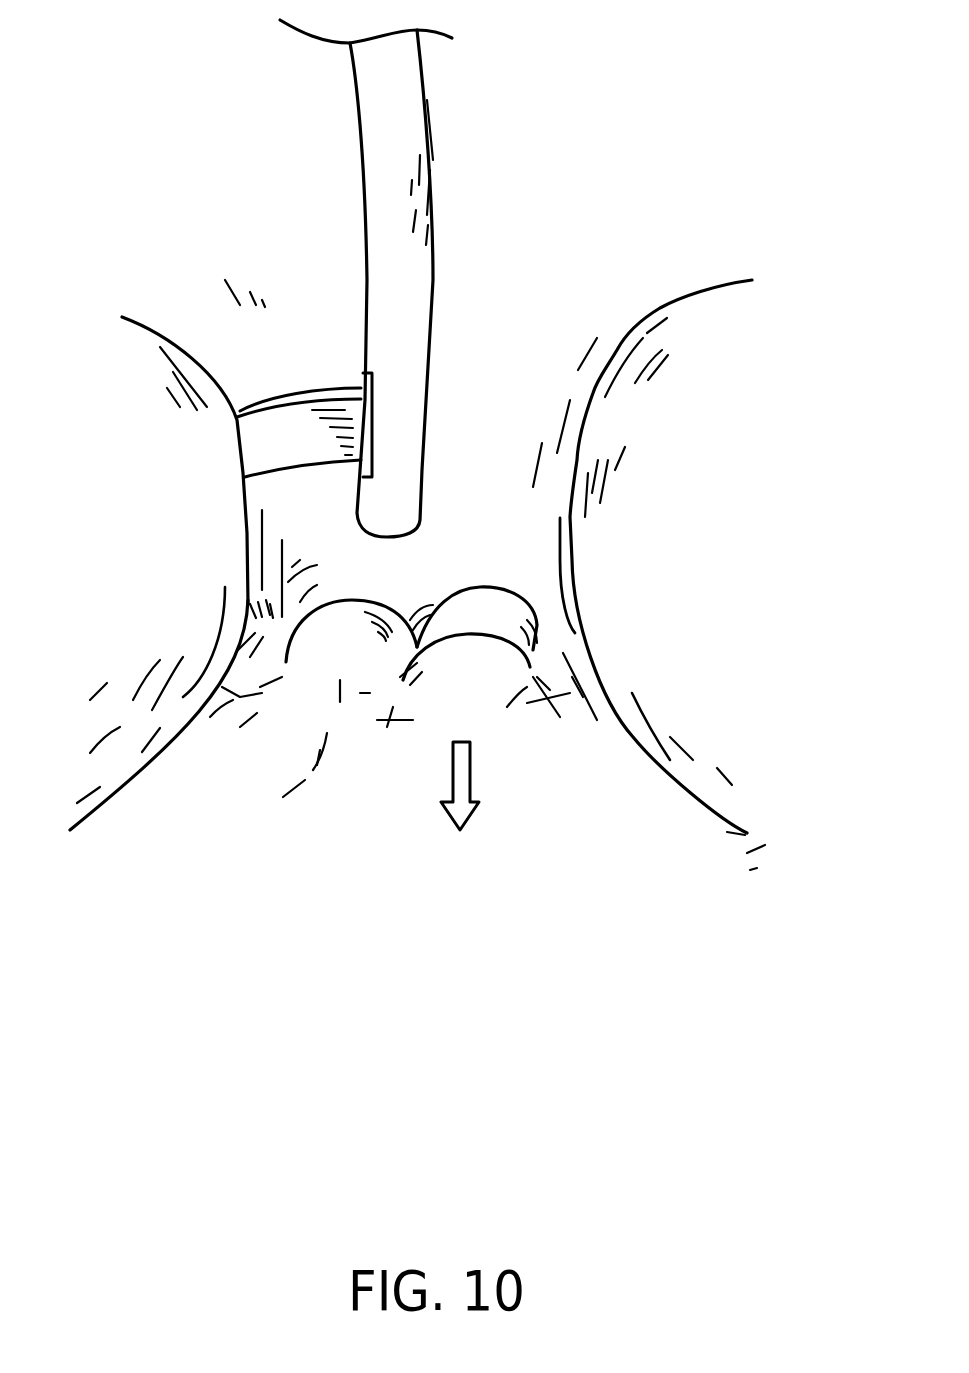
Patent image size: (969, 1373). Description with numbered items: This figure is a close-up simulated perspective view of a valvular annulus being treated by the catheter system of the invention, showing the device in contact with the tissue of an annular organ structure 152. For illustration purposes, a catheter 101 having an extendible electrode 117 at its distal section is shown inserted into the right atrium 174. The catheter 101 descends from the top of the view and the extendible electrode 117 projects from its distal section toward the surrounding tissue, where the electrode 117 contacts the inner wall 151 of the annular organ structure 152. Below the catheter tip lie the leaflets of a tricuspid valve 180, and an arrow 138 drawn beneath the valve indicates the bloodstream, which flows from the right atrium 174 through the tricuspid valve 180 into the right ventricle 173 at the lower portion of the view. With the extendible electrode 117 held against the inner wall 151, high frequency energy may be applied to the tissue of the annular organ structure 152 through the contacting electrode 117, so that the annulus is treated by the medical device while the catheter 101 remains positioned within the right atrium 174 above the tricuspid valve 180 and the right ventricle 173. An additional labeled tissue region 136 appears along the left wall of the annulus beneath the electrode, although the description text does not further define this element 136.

The catheter 101 is at (448, 115).
The extendible electrode 117 is at (322, 380).
The inner wall 151 is at (243, 492).
The left tissue region 136 is at (283, 542).
The annular organ structure 152 is at (560, 518).
The tricuspid valve 180 is at (553, 623).
The arrow 138 is at (483, 820).
The right atrium 174 is at (686, 159).
The right ventricle 173 is at (259, 849).